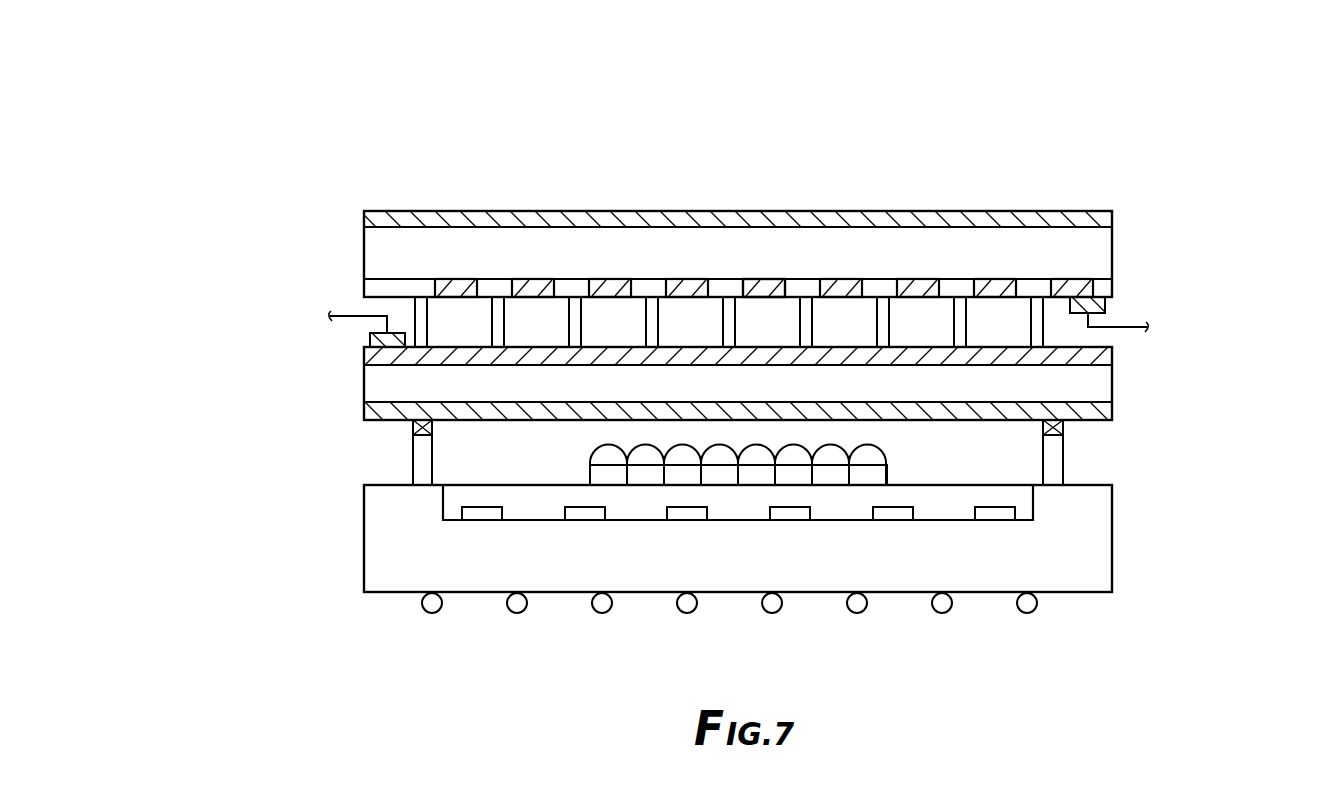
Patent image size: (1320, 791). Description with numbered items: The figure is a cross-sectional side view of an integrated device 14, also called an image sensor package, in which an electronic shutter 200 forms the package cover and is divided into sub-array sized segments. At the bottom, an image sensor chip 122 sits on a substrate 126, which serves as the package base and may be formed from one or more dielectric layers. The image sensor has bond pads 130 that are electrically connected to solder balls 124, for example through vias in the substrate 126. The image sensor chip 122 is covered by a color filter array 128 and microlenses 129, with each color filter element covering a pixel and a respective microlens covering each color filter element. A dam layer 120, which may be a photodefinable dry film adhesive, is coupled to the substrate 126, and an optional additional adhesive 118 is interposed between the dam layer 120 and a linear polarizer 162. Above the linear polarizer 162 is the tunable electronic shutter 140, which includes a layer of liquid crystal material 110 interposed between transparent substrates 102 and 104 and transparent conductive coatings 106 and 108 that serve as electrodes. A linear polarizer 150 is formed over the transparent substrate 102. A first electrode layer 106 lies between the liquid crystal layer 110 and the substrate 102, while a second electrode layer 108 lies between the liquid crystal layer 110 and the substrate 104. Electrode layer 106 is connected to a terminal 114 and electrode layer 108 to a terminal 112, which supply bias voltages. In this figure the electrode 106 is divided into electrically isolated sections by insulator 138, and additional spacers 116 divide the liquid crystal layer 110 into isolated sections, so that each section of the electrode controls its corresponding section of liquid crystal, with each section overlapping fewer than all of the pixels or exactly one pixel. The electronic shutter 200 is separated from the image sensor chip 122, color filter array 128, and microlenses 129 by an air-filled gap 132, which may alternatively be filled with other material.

The integrated device 14 is at (359, 110).
The transparent substrate 102 is at (1098, 245).
The transparent substrate 104 is at (380, 384).
The electrode layer 106 is at (609, 286).
The electrode layer 108 is at (364, 358).
The liquid crystal layer 110 is at (671, 310).
The terminal 112 is at (370, 340).
The terminal 114 is at (1100, 305).
The spacer 116 is at (421, 302).
The adhesive 118 is at (1065, 428).
The dam layer 120 is at (1065, 460).
The image sensor chip 122 is at (1080, 550).
The solder ball 124 is at (600, 606).
The substrate 126 is at (402, 552).
The color filter array 128 is at (900, 469).
The microlens 129 is at (580, 447).
The bond pad 130 is at (905, 513).
The air-filled gap 132 is at (905, 437).
The insulator 138 is at (793, 286).
The tunable electronic shutter 140 is at (1218, 402).
The linear polarizer 150 is at (1033, 217).
The linear polarizer 162 is at (412, 428).
The electronic shutter 200 is at (260, 418).